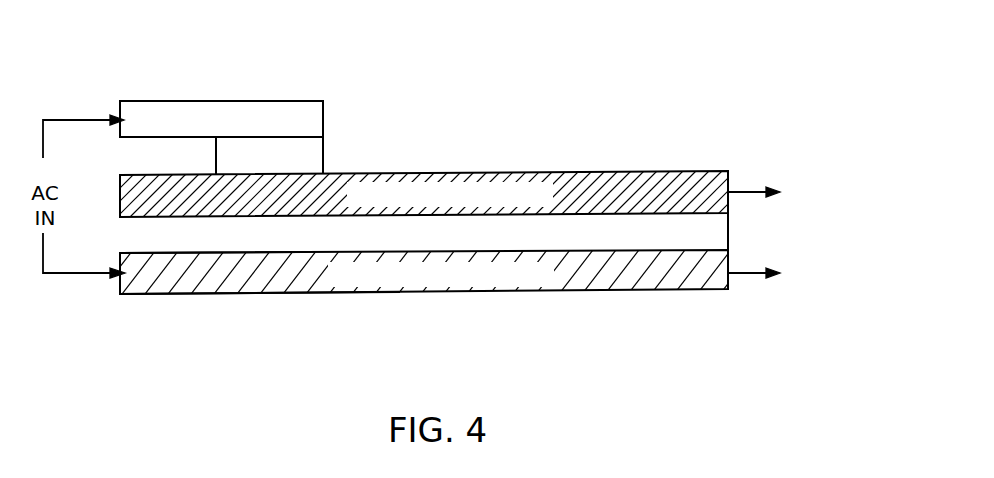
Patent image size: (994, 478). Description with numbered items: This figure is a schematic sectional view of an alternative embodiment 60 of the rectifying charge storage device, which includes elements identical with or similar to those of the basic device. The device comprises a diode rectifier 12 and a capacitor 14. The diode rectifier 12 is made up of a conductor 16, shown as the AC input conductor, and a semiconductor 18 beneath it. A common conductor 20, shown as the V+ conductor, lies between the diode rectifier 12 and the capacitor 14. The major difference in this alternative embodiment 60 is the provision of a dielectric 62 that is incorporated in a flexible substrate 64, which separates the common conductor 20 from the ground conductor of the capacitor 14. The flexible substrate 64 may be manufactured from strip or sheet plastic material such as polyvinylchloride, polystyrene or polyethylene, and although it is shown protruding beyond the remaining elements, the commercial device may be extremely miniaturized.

The diode rectifier 12 is at (290, 90).
The capacitor 14 is at (597, 290).
The conductor 16 is at (213, 101).
The semiconductor 18 is at (323, 143).
The common conductor 20 is at (491, 160).
The alternative embodiment 60 is at (257, 310).
The dielectric 62 is at (175, 242).
The flexible substrate 64 is at (672, 225).